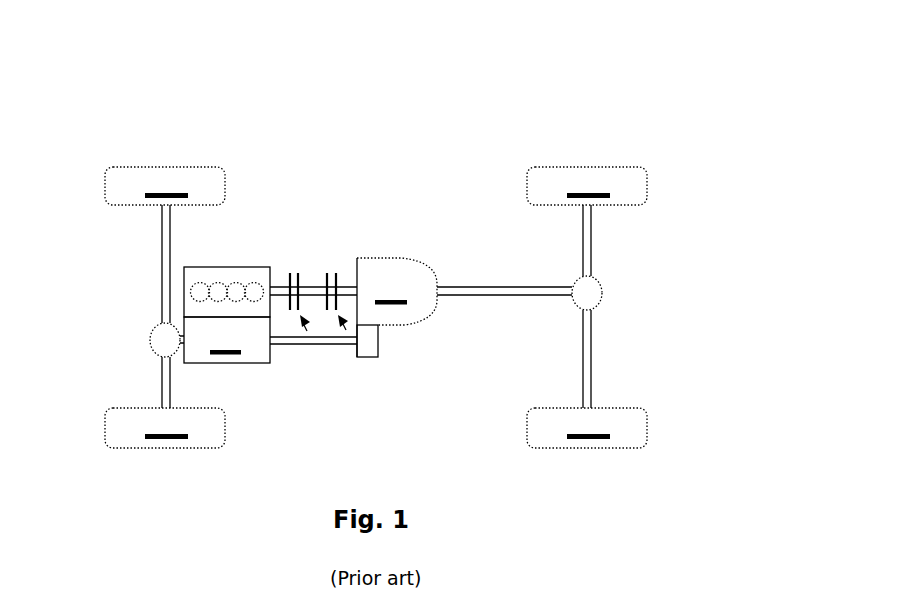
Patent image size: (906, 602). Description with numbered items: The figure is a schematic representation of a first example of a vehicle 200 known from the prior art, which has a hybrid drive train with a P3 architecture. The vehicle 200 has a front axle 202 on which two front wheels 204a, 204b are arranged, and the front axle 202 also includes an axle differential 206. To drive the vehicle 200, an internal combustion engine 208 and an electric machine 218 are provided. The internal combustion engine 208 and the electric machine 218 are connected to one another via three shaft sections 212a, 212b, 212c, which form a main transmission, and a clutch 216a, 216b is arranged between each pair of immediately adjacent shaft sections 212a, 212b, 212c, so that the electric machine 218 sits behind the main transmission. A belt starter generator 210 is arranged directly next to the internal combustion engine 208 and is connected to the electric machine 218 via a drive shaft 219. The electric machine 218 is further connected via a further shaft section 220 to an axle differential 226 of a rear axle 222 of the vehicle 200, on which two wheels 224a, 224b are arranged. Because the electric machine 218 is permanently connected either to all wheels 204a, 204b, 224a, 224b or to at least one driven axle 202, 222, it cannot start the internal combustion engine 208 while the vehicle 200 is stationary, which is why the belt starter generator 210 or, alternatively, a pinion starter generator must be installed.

The vehicle 200 is at (679, 125).
The front axle 202 is at (161, 258).
The front wheel 204a is at (165, 186).
The front wheel 204b is at (165, 428).
The axle differential 206 is at (160, 341).
The internal combustion engine 208 is at (228, 266).
The belt starter generator 210 is at (227, 340).
The shaft section 212a is at (290, 272).
The shaft section 212b is at (313, 288).
The shaft section 212c is at (338, 272).
The clutch 216a is at (307, 333).
The clutch 216b is at (346, 332).
The electric machine 218 is at (397, 307).
The drive shaft 219 is at (283, 346).
The further shaft section 220 is at (502, 297).
The rear axle 222 is at (593, 243).
The wheel 224a is at (587, 186).
The wheel 224b is at (587, 428).
The axle differential 226 is at (603, 293).